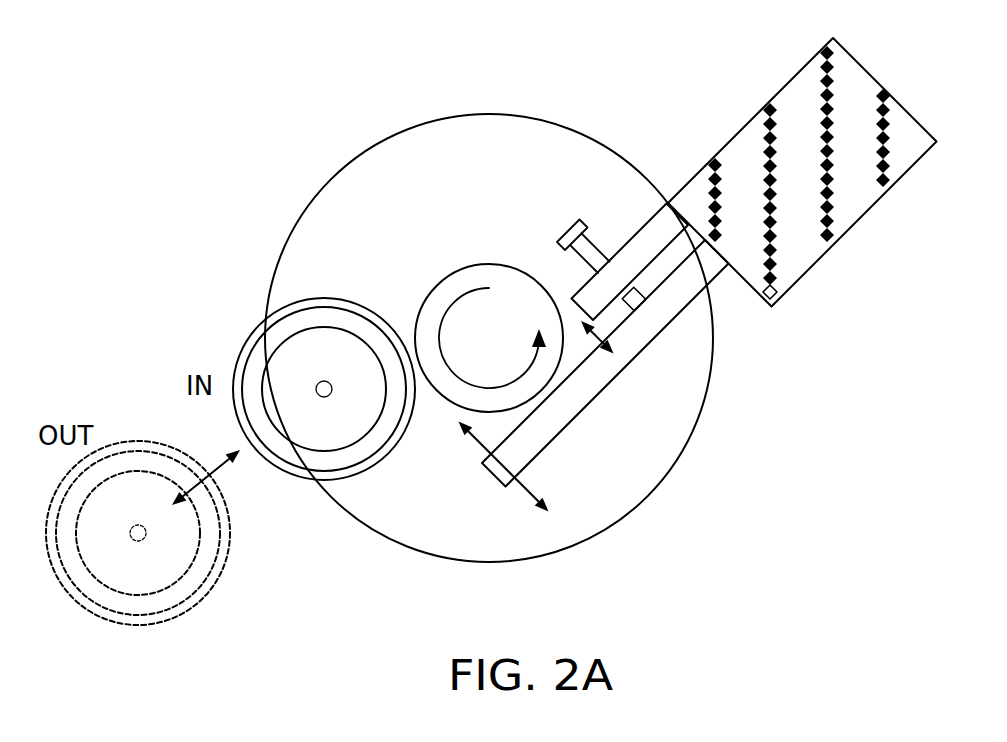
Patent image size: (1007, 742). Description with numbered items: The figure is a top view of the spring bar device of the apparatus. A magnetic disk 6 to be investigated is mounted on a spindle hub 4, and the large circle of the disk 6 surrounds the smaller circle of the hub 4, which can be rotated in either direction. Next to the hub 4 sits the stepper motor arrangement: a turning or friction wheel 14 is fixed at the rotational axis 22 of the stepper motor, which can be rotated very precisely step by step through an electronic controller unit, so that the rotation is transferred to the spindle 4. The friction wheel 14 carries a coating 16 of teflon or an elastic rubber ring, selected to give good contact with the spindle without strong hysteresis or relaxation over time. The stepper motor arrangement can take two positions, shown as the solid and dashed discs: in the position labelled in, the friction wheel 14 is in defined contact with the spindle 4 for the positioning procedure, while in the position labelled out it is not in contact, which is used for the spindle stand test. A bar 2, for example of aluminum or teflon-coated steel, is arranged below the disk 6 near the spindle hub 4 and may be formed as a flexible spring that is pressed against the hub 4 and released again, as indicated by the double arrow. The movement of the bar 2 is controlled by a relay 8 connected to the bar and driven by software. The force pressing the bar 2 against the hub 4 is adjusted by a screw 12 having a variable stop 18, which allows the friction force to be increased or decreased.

The bar 2 is at (647, 337).
The spindle hub 4 is at (435, 317).
The magnetic disk 6 is at (452, 133).
The relay 8 is at (807, 78).
The screw 12 is at (587, 243).
The friction wheel 14 is at (230, 348).
The coating 16 is at (292, 320).
The variable stop 18 is at (641, 233).
The rotational axis 22 is at (338, 443).